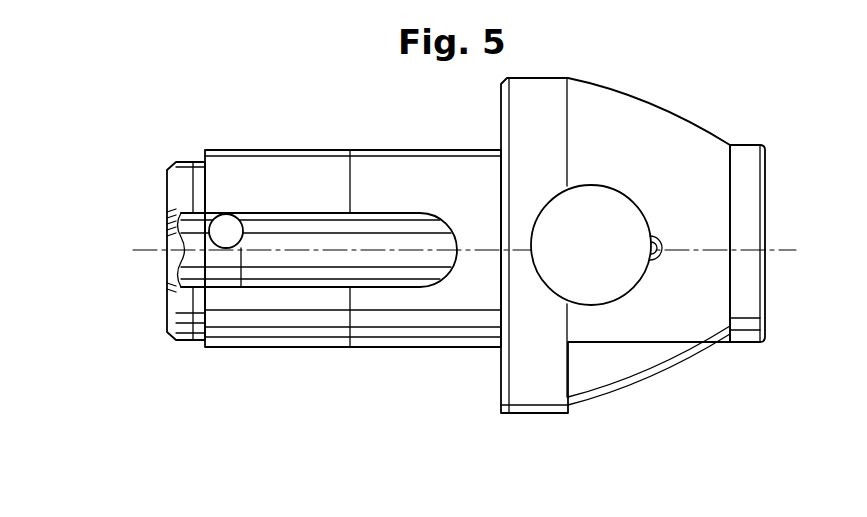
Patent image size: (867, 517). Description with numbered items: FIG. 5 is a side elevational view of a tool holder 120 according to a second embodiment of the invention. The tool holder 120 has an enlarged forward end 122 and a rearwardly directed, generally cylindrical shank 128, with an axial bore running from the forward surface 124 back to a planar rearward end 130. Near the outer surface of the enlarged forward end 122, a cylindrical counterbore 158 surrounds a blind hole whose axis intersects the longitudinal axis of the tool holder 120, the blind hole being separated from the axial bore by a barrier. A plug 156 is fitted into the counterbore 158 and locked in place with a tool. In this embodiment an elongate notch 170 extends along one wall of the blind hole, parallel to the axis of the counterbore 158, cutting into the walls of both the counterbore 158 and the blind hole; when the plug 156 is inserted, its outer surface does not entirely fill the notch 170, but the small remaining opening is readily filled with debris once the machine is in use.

The tool holder 120 is at (470, 245).
The enlarged forward end 122 is at (650, 390).
The forward surface 124 is at (767, 185).
The shank 128 is at (253, 347).
The planar rearward end 130 is at (168, 190).
The plug 156 is at (602, 277).
The cylindrical counterbore 158 is at (593, 191).
The elongate notch 170 is at (657, 233).